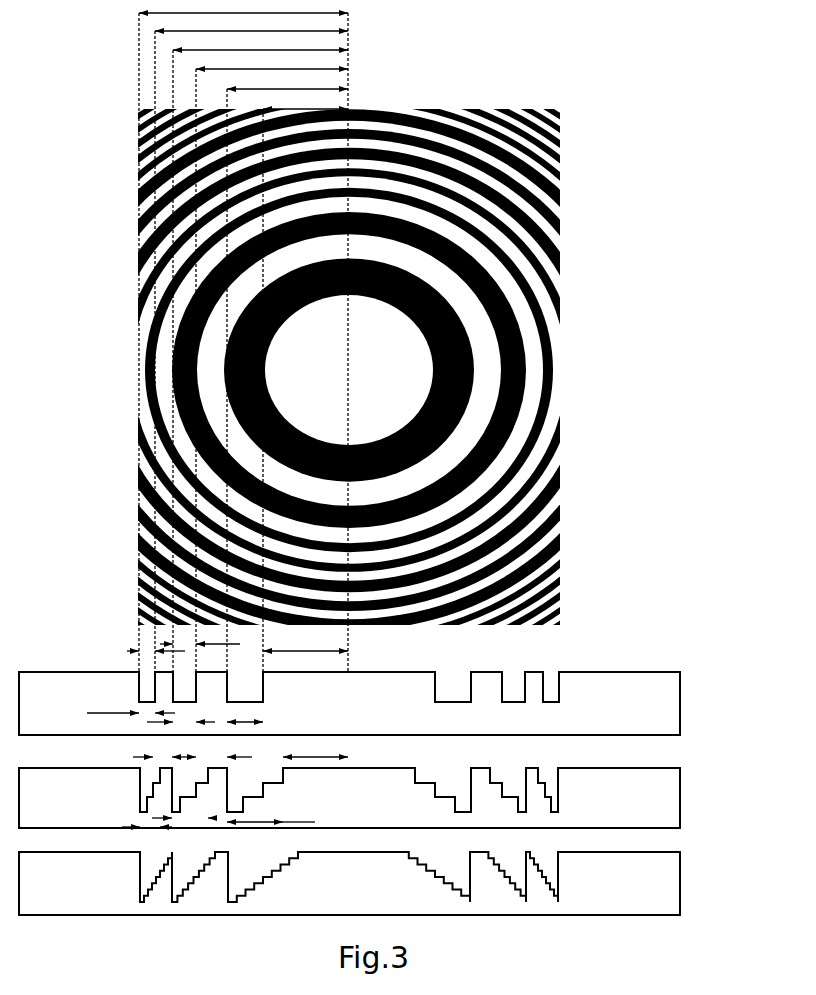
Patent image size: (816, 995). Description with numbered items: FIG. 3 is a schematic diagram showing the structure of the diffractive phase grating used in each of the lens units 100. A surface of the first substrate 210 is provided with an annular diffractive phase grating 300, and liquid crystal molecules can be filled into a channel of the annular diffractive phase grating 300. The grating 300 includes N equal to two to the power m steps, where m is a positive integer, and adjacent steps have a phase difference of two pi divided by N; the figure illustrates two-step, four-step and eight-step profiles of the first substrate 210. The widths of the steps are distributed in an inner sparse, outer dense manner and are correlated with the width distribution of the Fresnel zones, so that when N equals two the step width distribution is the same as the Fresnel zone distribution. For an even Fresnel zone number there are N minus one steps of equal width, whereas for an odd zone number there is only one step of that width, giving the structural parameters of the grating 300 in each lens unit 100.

The lens unit 100 is at (402, 41).
The annular diffractive phase grating 300 is at (560, 368).
The first substrate 210 is at (680, 700).